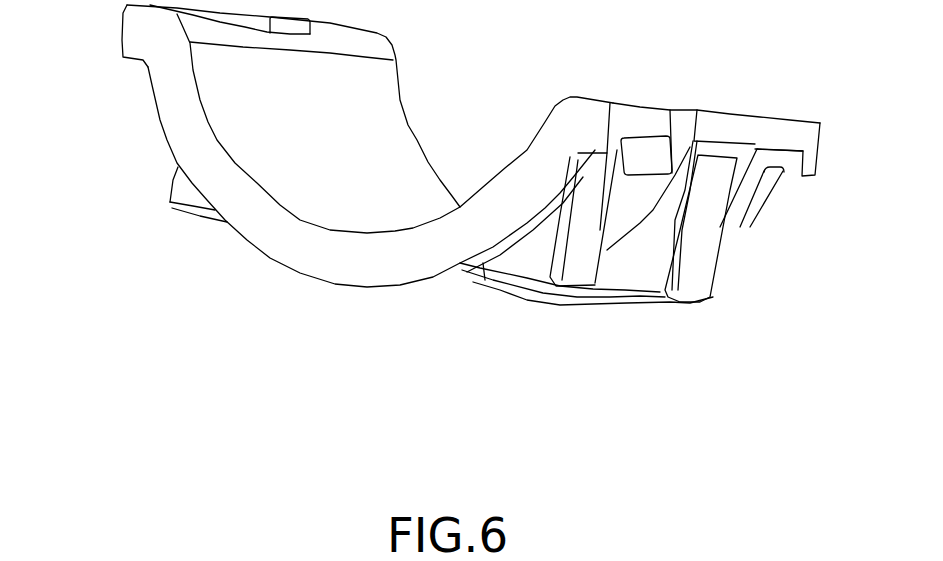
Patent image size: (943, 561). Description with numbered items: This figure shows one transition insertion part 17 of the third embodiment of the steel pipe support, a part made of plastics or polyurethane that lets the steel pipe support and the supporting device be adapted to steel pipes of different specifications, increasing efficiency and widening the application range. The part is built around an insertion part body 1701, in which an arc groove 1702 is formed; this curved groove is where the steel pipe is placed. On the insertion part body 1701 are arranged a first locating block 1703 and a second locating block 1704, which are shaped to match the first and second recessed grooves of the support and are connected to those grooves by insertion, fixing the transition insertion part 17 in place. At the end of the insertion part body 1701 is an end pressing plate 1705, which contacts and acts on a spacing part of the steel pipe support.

The transition insertion part 17 is at (137, 35).
The insertion part body 1701 is at (318, 250).
The arc groove 1702 is at (468, 120).
The first locating block 1703 is at (193, 200).
The second locating block 1704 is at (695, 267).
The end pressing plate 1705 is at (770, 130).